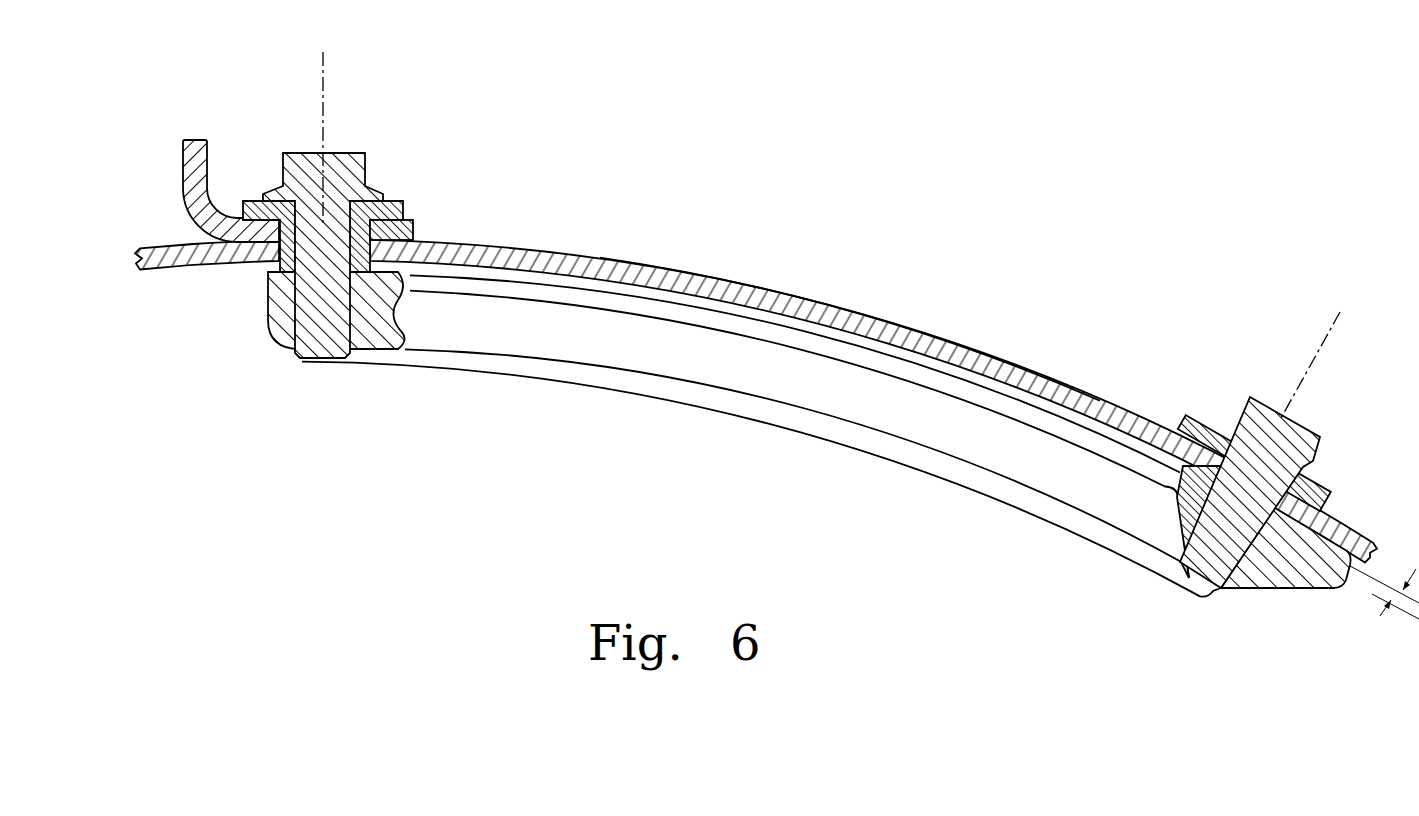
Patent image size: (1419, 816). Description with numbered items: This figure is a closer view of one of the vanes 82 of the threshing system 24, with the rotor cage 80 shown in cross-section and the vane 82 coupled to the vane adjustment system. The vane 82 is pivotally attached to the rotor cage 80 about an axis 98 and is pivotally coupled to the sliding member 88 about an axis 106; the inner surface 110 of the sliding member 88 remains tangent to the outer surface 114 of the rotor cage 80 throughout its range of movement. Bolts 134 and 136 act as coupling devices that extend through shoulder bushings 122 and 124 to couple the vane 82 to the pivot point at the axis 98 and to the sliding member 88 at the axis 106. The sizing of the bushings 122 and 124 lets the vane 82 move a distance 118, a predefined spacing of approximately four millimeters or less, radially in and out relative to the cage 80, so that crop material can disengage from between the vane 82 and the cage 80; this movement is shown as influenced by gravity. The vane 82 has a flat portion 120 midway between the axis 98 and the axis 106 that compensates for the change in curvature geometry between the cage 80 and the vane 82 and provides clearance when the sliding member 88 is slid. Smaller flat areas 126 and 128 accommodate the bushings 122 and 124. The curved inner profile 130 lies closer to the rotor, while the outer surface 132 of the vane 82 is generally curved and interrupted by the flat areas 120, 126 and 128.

The threshing system 24 is at (1094, 225).
The rotor cage 80 is at (862, 312).
The vane 82 is at (753, 420).
The sliding member 88 is at (185, 165).
The axis 98 is at (1323, 336).
The axis 106 is at (323, 80).
The inner surface 110 is at (413, 222).
The outer surface 114 is at (613, 258).
The distance 118 is at (1418, 604).
The flat portion 120 is at (805, 333).
The shoulder bushing 122 is at (403, 201).
The shoulder bushing 124 is at (1193, 423).
The flat area 126 is at (285, 274).
The flat area 128 is at (1280, 522).
The curved inner profile 130 is at (935, 480).
The outer surface 132 is at (968, 398).
The bolt 134 is at (350, 153).
The bolt 136 is at (1312, 432).